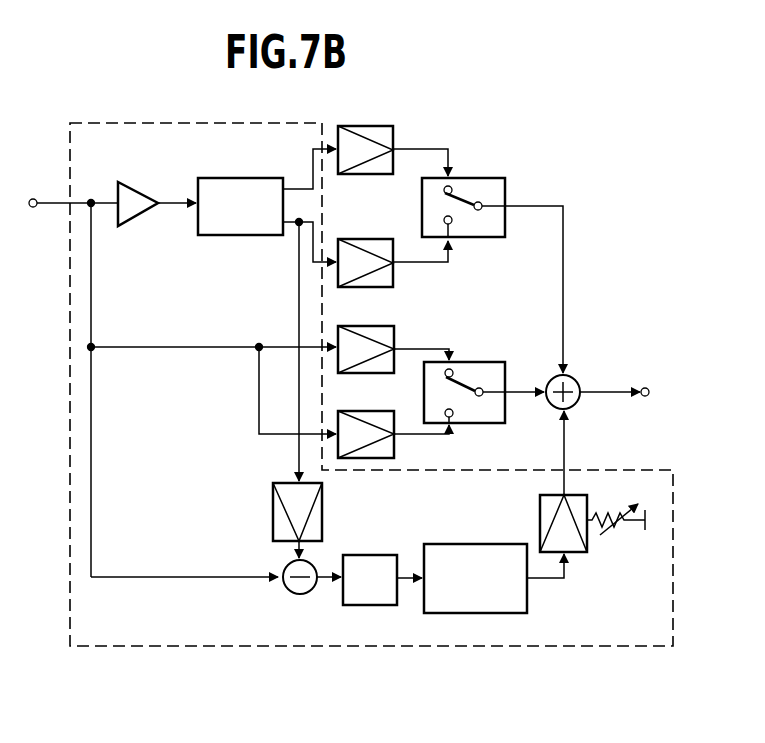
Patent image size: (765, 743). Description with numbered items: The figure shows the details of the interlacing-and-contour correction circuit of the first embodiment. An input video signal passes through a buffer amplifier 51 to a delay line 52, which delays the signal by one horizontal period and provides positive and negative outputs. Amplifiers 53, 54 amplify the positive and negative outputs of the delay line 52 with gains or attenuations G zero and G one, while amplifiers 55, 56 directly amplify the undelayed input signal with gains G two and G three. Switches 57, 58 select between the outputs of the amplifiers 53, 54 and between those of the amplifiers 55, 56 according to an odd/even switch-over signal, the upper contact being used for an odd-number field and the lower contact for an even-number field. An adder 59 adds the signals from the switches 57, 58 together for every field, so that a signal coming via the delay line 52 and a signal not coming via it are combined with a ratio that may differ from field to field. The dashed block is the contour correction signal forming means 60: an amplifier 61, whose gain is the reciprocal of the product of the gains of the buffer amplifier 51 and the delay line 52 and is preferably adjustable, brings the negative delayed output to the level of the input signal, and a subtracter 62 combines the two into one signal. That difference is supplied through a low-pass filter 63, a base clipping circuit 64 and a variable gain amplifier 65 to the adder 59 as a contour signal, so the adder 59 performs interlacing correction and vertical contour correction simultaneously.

The buffer amplifier 51 is at (143, 192).
The delay line 52 is at (238, 178).
The amplifier 53 is at (387, 126).
The amplifier 54 is at (388, 239).
The amplifier 55 is at (387, 326).
The amplifier 56 is at (380, 411).
The switch 57 is at (485, 178).
The switch 58 is at (487, 362).
The adder 59 is at (577, 380).
The contour correction signal forming means 60 is at (378, 647).
The amplifier 61 is at (322, 511).
The subtracter 62 is at (297, 594).
The low-pass filter 63 is at (377, 555).
The base clipping circuit 64 is at (463, 544).
The variable gain amplifier 65 is at (540, 512).